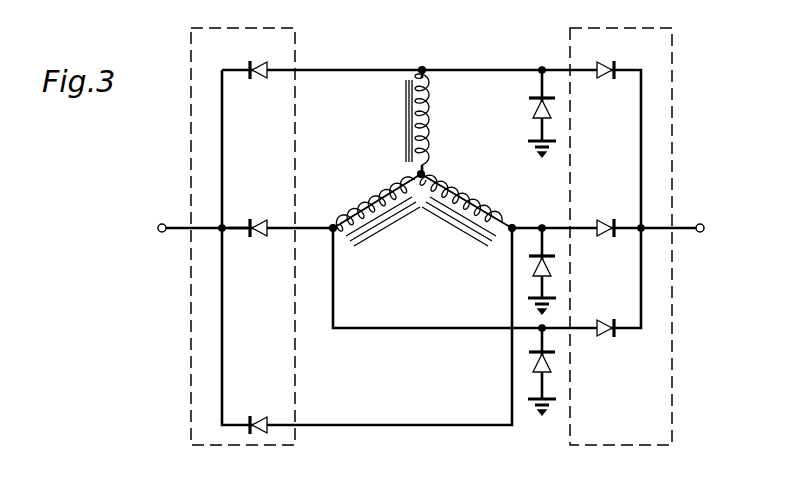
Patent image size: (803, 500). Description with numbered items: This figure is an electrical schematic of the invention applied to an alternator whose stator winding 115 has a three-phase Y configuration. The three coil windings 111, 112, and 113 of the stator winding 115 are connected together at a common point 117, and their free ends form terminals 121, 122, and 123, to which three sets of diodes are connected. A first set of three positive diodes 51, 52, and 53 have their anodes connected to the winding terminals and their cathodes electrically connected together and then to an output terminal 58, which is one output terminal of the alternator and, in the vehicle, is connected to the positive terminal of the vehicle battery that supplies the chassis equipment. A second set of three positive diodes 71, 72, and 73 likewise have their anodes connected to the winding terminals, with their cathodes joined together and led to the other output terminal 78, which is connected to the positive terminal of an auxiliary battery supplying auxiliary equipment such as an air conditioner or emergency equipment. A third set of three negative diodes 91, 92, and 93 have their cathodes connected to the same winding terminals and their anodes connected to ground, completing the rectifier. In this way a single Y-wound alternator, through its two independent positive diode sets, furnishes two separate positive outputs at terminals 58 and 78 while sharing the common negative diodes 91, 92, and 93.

The positive diode 51 is at (602, 62).
The positive diode 52 is at (610, 222).
The positive diode 53 is at (612, 338).
The output terminal 58 is at (700, 222).
The positive diode 71 is at (258, 65).
The positive diode 72 is at (258, 418).
The positive diode 73 is at (258, 222).
The output terminal 78 is at (250, 238).
The negative diode 91 is at (538, 92).
The negative diode 92 is at (553, 258).
The negative diode 93 is at (535, 362).
The winding 111 is at (368, 199).
The winding 112 is at (431, 120).
The winding 113 is at (478, 207).
The stator winding 115 is at (441, 254).
The common connection point 117 is at (416, 172).
The terminal 121 is at (337, 232).
The terminal 122 is at (421, 68).
The terminal 123 is at (509, 232).